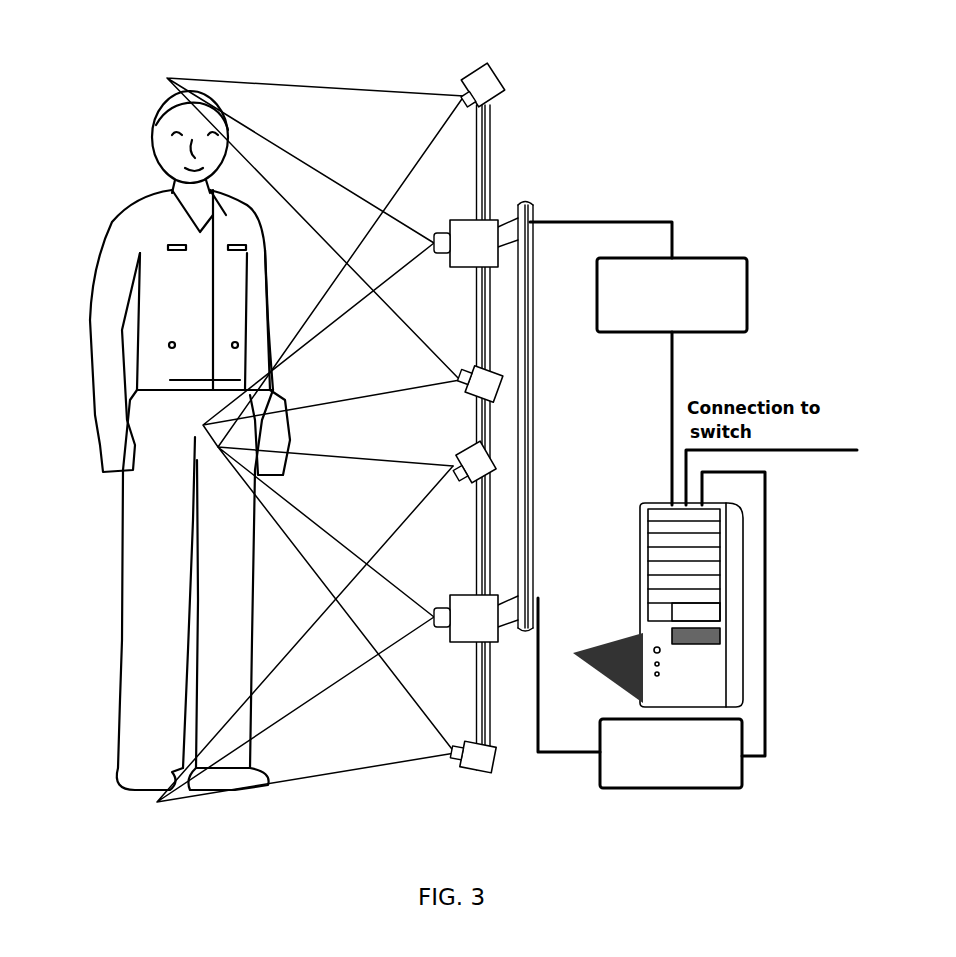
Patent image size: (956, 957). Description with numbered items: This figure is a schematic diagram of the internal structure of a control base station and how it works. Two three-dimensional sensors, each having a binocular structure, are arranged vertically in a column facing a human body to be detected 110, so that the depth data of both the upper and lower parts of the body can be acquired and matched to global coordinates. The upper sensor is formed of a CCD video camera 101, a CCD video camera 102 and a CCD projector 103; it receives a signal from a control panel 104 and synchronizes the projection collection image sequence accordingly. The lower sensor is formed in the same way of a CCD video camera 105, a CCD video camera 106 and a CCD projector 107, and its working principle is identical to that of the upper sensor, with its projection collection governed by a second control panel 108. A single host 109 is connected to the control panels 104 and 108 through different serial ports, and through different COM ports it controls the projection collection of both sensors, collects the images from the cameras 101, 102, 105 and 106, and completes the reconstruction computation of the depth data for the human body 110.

The CCD video camera 101 is at (472, 72).
The CCD video camera 102 is at (473, 365).
The CCD projector 103 is at (455, 220).
The control panel 104 is at (650, 257).
The CCD video camera 105 is at (463, 453).
The CCD video camera 106 is at (465, 742).
The CCD projector 107 is at (453, 595).
The control panel 108 is at (620, 790).
The host 109 is at (633, 498).
The human body to be detected 110 is at (145, 128).